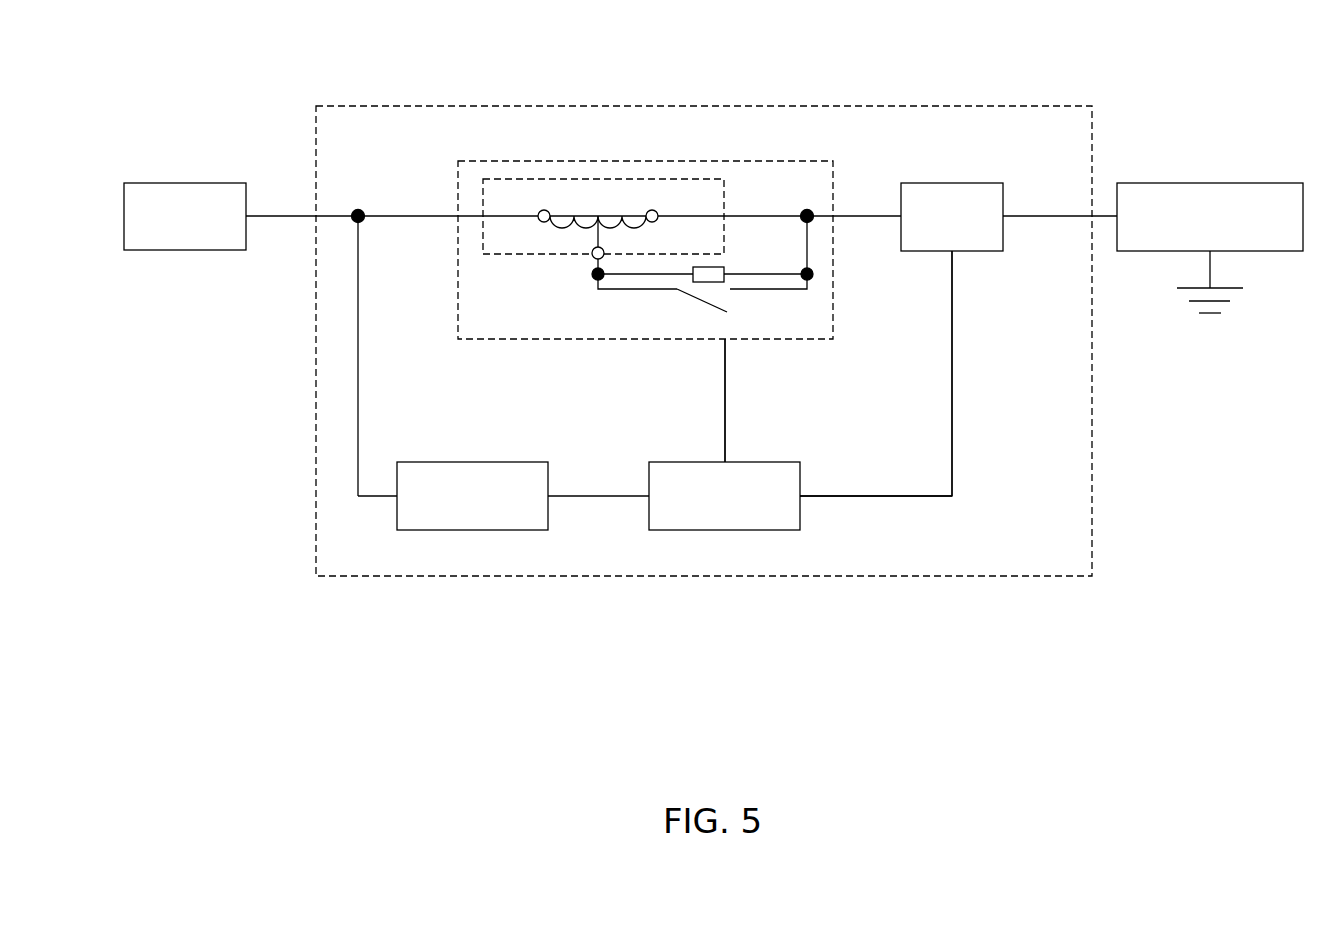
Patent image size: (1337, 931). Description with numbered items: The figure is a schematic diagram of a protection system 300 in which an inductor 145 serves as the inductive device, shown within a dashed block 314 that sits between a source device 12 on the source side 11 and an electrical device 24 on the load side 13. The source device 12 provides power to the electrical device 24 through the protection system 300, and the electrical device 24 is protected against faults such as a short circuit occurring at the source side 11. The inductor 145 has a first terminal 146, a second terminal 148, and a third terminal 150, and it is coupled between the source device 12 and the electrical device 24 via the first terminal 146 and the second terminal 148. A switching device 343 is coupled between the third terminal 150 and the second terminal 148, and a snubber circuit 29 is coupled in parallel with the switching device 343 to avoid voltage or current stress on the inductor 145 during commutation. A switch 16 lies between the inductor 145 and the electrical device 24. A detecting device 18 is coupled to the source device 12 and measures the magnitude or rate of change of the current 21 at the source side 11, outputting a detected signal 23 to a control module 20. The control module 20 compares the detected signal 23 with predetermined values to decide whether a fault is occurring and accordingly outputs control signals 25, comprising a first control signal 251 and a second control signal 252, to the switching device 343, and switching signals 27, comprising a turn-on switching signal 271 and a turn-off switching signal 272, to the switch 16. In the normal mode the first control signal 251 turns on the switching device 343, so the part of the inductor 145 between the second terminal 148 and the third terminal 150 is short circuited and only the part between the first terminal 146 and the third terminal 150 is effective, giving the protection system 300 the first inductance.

The protection system 300 is at (350, 86).
The source device 12 is at (173, 193).
The source side 11 is at (306, 271).
The current 21 is at (357, 325).
The filter module 314 is at (714, 161).
The inductor 145 is at (583, 178).
The first terminal 146 is at (540, 212).
The second terminal 148 is at (657, 212).
The third terminal 150 is at (593, 258).
The snubber circuit 29 is at (714, 270).
The switching device 343 is at (700, 300).
The switch 16 is at (937, 198).
The electrical device 24 is at (1202, 200).
The load side 13 is at (1156, 273).
The detecting device 18 is at (513, 522).
The detected signal 23 is at (597, 495).
The control module 20 is at (767, 523).
The control signals 25 is at (811, 385).
The first control signal 251 is at (789, 370).
The second control signal 252 is at (789, 438).
The switching signals 27 is at (1037, 337).
The turn-on switching signal 271 is at (1016, 373).
The turn-off switching signal 272 is at (940, 451).